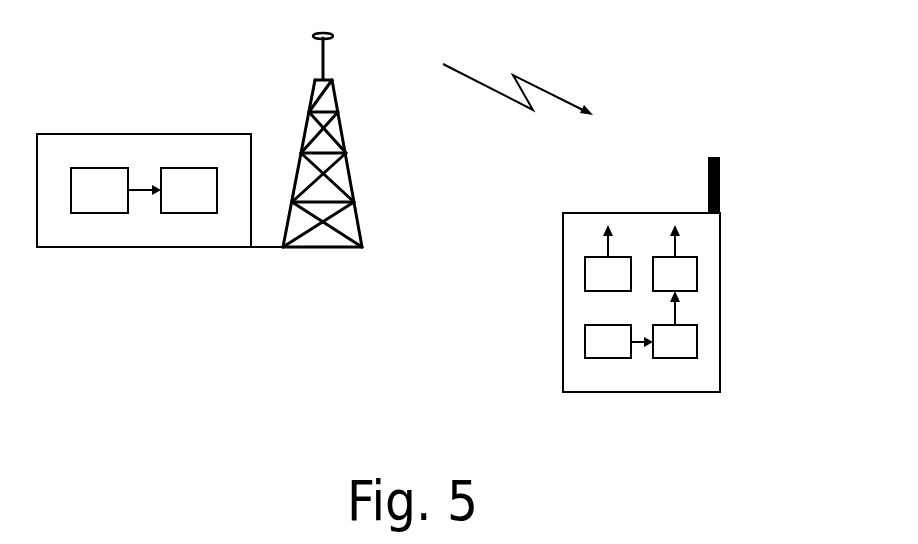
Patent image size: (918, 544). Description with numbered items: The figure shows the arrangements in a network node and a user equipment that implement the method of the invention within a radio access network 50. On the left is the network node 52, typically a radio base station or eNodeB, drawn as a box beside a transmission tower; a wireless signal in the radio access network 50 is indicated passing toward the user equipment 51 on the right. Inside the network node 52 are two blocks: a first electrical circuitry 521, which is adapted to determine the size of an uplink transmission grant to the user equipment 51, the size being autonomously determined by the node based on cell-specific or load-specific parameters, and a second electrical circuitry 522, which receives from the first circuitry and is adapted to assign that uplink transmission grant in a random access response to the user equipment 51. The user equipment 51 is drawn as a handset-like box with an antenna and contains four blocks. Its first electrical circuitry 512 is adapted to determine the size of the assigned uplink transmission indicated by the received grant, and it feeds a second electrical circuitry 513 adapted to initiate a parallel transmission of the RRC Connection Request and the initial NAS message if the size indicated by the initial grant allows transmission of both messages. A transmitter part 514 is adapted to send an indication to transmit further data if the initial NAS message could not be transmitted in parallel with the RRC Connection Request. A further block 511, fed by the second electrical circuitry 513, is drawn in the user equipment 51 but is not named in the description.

The radio access network 50 is at (518, 113).
The user equipment 51 is at (693, 406).
The display unit 511 is at (708, 282).
The first electrical circuitry 512 is at (573, 337).
The second electrical circuitry 513 is at (708, 337).
The transmitter part 514 is at (573, 270).
The network node 52 is at (296, 57).
The first electrical circuitry 521 is at (94, 220).
The second electrical circuitry 522 is at (184, 220).